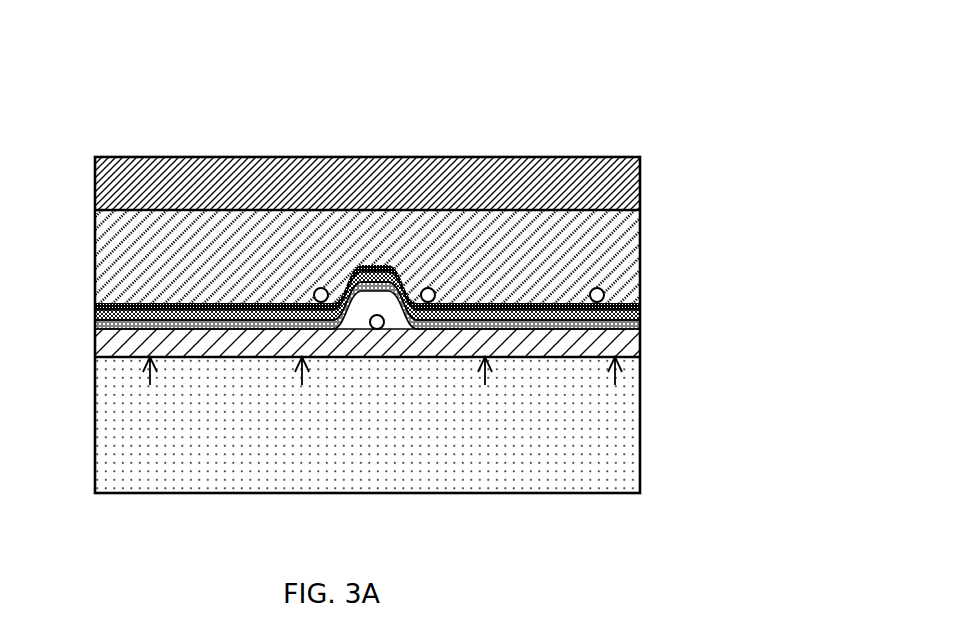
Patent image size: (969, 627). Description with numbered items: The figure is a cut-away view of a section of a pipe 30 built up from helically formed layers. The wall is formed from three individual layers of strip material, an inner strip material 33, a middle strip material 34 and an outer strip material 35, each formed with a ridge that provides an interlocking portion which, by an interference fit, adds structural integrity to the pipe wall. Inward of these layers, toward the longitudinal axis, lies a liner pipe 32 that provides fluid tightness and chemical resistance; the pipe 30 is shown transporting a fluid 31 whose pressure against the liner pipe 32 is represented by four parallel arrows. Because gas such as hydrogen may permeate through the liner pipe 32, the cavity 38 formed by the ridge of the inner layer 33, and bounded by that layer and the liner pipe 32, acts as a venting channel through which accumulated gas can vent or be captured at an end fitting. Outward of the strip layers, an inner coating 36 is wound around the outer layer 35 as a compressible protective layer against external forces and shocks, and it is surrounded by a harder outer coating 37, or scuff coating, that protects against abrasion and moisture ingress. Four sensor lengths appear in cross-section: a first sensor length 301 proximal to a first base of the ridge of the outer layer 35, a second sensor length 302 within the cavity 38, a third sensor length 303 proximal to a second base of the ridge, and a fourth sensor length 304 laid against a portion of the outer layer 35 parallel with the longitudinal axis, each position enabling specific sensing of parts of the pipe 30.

The pipe 30 is at (550, 73).
The fluid 31 is at (141, 441).
The liner pipe 32 is at (642, 342).
The inner strip material 33 is at (95, 328).
The middle strip material 34 is at (95, 316).
The outer strip material 35 is at (95, 306).
The inner coating 36 is at (141, 268).
The outer coating 37 is at (141, 198).
The cavity 38 is at (372, 300).
The first sensor length 301 is at (321, 288).
The second sensor length 302 is at (377, 329).
The third sensor length 303 is at (428, 288).
The fourth sensor length 304 is at (597, 288).